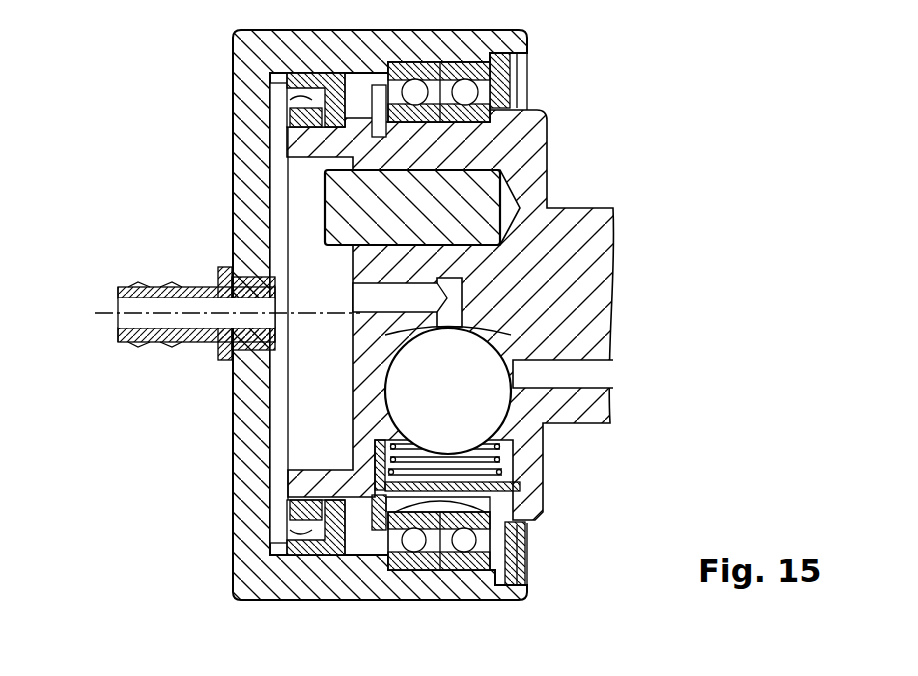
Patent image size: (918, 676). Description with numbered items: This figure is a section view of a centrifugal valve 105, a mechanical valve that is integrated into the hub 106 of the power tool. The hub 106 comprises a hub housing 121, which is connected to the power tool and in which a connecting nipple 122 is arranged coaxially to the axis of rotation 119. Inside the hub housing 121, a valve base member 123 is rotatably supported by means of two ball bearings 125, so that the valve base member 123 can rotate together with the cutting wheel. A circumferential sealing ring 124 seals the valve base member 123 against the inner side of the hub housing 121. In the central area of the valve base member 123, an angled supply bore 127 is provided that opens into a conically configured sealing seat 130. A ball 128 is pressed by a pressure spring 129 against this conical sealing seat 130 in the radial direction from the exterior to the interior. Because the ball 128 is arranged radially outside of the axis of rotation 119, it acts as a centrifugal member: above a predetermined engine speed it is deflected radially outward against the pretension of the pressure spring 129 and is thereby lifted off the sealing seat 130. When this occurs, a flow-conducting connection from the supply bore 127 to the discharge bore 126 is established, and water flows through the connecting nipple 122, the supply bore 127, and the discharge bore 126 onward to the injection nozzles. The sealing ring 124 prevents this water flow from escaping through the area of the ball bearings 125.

The centrifugal valve 105 is at (451, 312).
The hub 106 is at (385, 348).
The axis of rotation 119 is at (103, 315).
The hub housing 121 is at (253, 562).
The connecting nipple 122 is at (172, 342).
The valve base member 123 is at (582, 403).
The sealing ring 124 is at (308, 556).
The ball bearings 125 is at (467, 572).
The discharge bore 126 is at (605, 376).
The supply bore 127 is at (367, 300).
The ball 128 is at (488, 405).
The pressure spring 129 is at (500, 457).
The sealing seat 130 is at (498, 325).